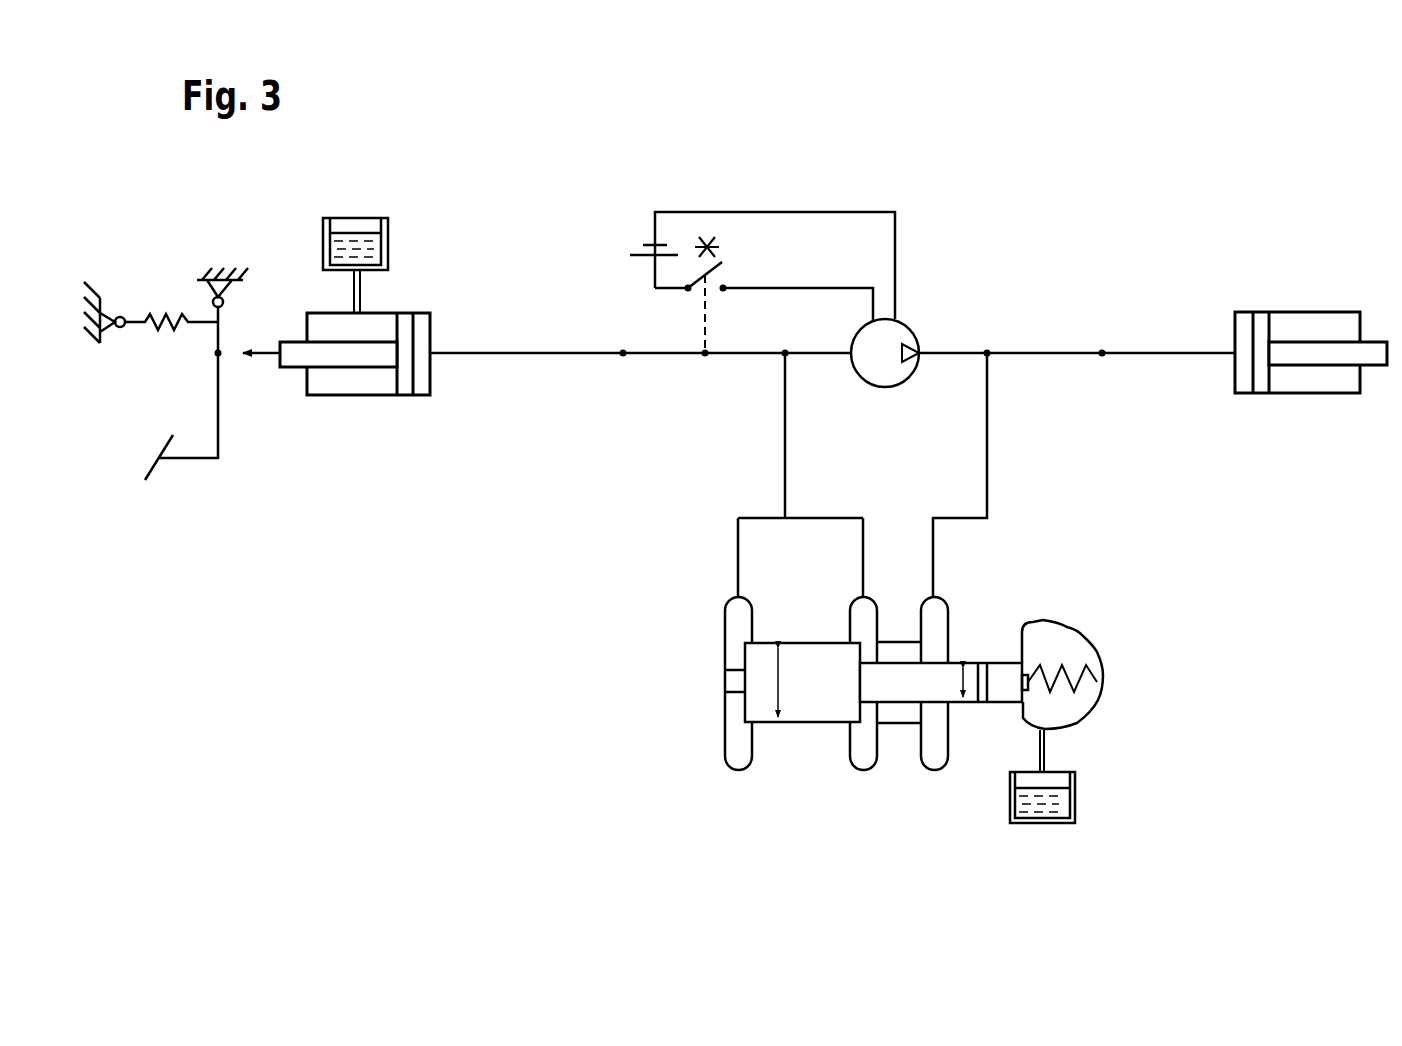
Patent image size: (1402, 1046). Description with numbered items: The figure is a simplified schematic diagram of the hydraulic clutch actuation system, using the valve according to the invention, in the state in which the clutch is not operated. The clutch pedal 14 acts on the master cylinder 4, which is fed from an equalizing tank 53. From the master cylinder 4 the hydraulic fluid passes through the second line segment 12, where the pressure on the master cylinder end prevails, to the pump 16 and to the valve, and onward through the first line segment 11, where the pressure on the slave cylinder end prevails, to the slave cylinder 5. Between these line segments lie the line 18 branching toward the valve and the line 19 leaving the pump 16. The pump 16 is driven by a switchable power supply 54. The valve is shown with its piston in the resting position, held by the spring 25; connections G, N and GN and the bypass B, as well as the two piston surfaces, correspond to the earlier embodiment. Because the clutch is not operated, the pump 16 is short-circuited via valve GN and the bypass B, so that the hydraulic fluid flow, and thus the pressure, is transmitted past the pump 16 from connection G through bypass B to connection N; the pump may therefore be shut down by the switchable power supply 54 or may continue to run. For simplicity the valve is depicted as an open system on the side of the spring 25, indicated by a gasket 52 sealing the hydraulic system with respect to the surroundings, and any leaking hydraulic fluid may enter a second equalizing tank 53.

The master cylinder 4 is at (405, 380).
The slave cylinder 5 is at (1265, 325).
The first line segment 11 is at (1040, 350).
The second line segment 12 is at (523, 350).
The clutch pedal 14 is at (151, 470).
The pump 16 is at (896, 337).
The branch line 18 is at (813, 355).
The pump outlet line 19 is at (938, 355).
The spring 25 is at (1076, 660).
The gasket 52 is at (941, 719).
The equalizing tank 53 is at (388, 243).
The switchable power supply 54 is at (751, 206).